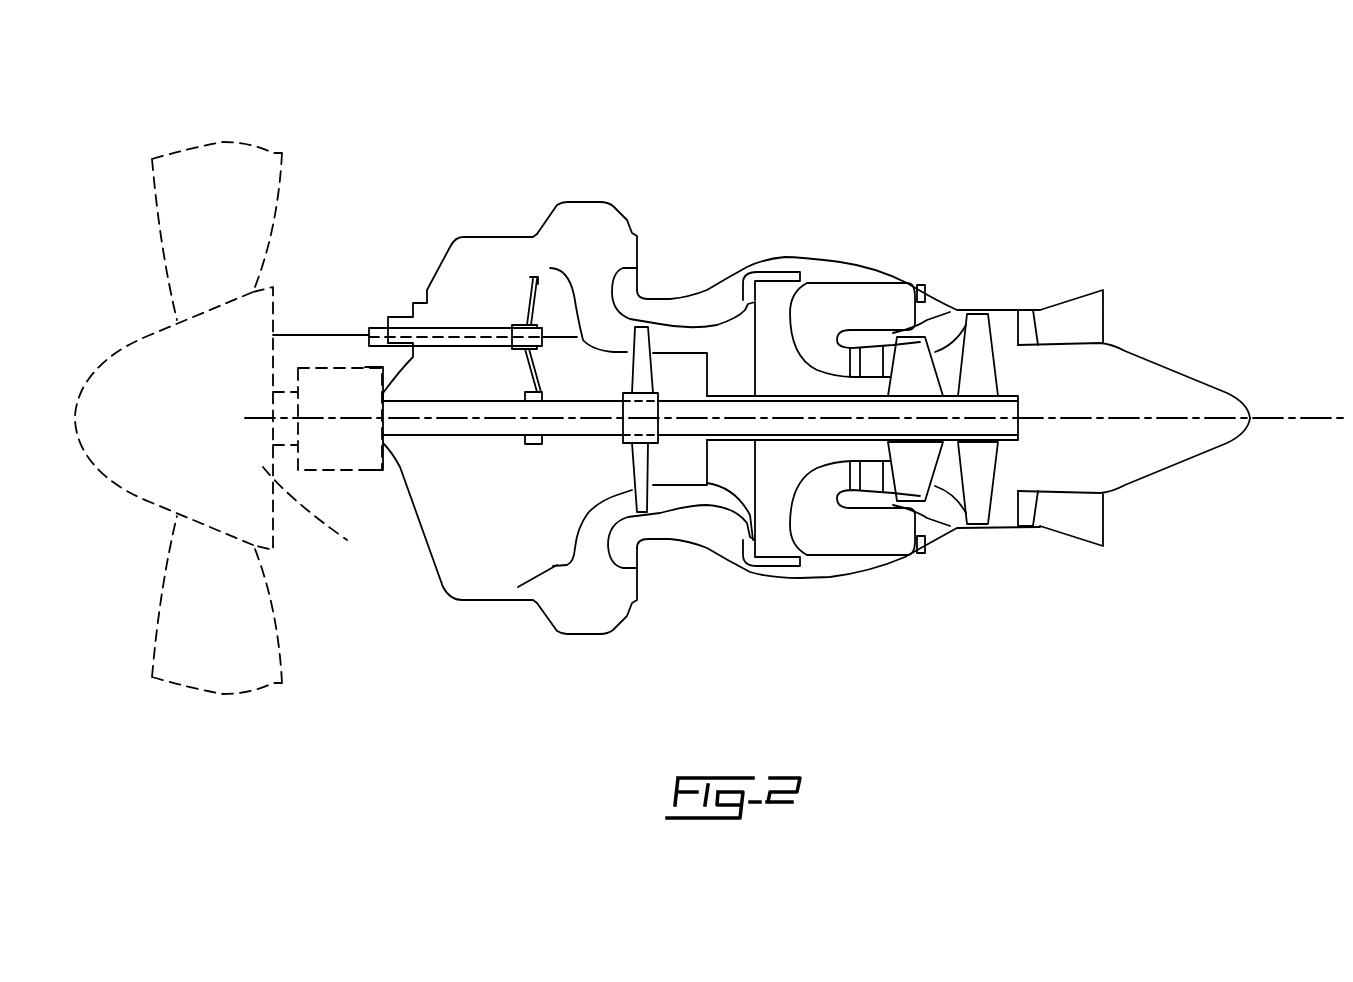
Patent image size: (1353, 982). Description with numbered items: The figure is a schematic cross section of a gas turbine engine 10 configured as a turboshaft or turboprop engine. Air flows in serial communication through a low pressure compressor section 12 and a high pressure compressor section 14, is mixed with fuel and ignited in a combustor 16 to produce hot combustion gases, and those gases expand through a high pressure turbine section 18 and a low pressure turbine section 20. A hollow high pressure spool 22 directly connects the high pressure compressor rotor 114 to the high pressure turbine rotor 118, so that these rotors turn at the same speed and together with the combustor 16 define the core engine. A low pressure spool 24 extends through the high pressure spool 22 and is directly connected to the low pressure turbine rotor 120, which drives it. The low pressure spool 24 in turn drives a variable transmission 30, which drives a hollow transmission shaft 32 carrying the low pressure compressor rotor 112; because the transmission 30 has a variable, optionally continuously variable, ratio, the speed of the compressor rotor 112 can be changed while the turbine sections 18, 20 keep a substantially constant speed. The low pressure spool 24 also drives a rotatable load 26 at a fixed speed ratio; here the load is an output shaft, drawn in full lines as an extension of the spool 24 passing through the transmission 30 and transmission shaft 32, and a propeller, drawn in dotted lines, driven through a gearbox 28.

The gas turbine engine 10 is at (1077, 210).
The low pressure compressor section 12 is at (623, 341).
The high pressure compressor section 14 is at (728, 302).
The combustor 16 is at (852, 308).
The high pressure turbine section 18 is at (917, 337).
The low pressure turbine section 20 is at (980, 302).
The high pressure spool 22 is at (783, 443).
The low pressure spool 24 is at (550, 268).
The rotatable load 26 is at (418, 437).
The gearbox 28 is at (330, 383).
The variable transmission 30 is at (625, 436).
The transmission shaft 32 is at (630, 440).
The low pressure compressor rotor 112 is at (642, 500).
The high pressure compressor rotor 114 is at (722, 365).
The high pressure turbine rotor 118 is at (922, 477).
The low pressure turbine rotor 120 is at (980, 503).